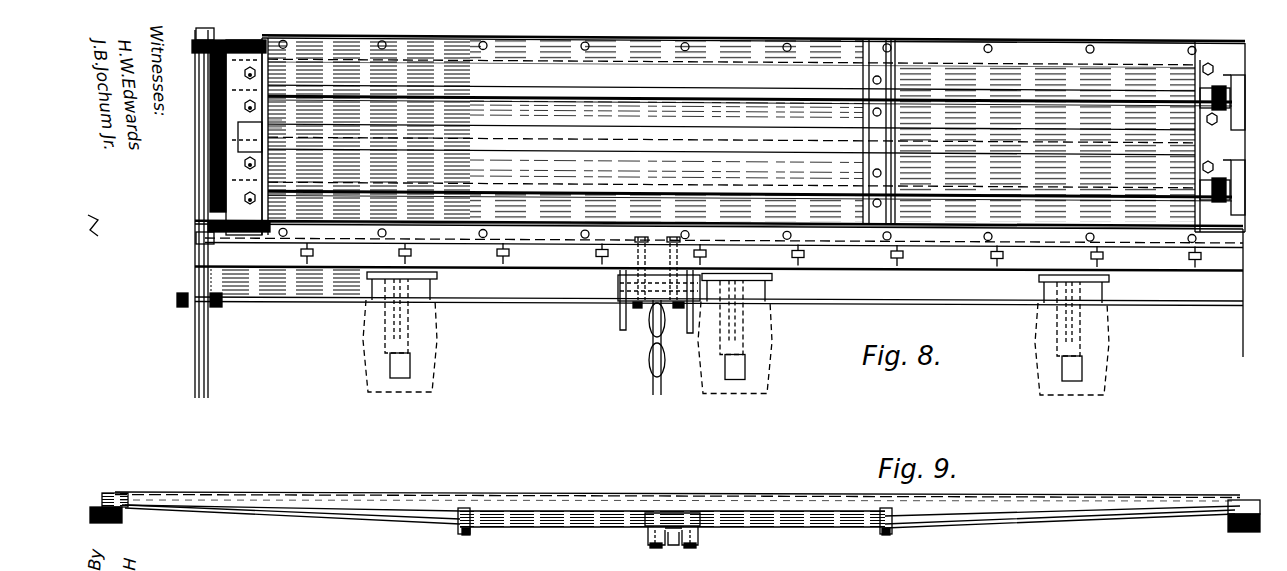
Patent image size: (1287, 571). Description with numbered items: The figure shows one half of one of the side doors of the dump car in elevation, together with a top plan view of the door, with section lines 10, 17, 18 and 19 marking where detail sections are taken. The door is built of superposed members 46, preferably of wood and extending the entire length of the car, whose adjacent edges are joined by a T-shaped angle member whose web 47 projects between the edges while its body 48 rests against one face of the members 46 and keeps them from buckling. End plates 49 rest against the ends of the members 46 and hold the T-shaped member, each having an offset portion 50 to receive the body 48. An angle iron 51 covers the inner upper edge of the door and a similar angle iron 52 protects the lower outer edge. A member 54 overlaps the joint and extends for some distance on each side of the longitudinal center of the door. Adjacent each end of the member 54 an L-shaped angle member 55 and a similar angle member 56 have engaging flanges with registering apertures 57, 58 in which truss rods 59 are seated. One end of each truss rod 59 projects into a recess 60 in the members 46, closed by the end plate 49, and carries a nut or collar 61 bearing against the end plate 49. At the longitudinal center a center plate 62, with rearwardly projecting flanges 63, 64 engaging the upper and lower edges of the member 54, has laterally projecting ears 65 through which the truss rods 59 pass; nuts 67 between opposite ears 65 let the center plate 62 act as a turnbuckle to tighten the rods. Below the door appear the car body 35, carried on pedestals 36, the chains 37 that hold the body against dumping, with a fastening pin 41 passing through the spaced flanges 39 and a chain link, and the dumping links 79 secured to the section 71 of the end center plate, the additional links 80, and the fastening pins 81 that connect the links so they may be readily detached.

In FIG. 8, the section line 10— 10 is at (295, 210).
In FIG. 9, the section line 17— 17 is at (686, 570).
In FIG. 9, the section line 18— 18 is at (456, 559).
In FIG. 8, the section line 19— 19 is at (1258, 130).
In FIG. 8, the car body 35 is at (349, 246).
In FIG. 8, the pedestals 36 is at (1102, 362).
In FIG. 8, the chains 37 is at (650, 368).
In FIG. 8, the flanges 39 is at (690, 333).
In FIG. 8, the fastening pin or bolt 41 is at (618, 284).
In FIG. 8, the members 46 is at (731, 72).
In FIG. 8, the web 47 is at (538, 138).
In FIG. 8, the body 48 is at (500, 130).
In FIG. 8, the end plates 49 is at (228, 155).
In FIG. 9, the end plates 49 is at (1240, 500).
In FIG. 8, the offset portion 50 is at (280, 120).
In FIG. 8, the angle iron 51 is at (530, 38).
In FIG. 9, the angle iron 51 is at (735, 506).
In FIG. 8, the angle iron 52 is at (570, 232).
In FIG. 8, the member 54 is at (1030, 78).
In FIG. 9, the member 54 is at (800, 516).
In FIG. 8, the angle bar or member 55 is at (864, 70).
In FIG. 9, the angle bar or member 55 is at (876, 508).
In FIG. 8, the angle bar or member 56 is at (895, 62).
In FIG. 9, the angle bar or member 56 is at (870, 532).
In FIG. 8, the aperture 57 is at (866, 80).
In FIG. 8, the aperture 58 is at (872, 112).
In FIG. 8, the truss rods or bars 59 is at (614, 184).
In FIG. 9, the truss rods or bars 59 is at (965, 530).
In FIG. 8, the recesses 60 is at (345, 100).
In FIG. 8, the nuts or collars 61 is at (200, 220).
In FIG. 9, the nuts or collars 61 is at (1244, 532).
In FIG. 8, the center plate 62 is at (1208, 126).
In FIG. 9, the center plate 62 is at (668, 528).
In FIG. 8, the rearwardly projecting flange 63 is at (1222, 62).
In FIG. 9, the rearwardly projecting flange 63 is at (688, 513).
In FIG. 8, the rearwardly projecting flange 64 is at (1212, 245).
In FIG. 8, the ears or lugs 65 is at (1212, 188).
In FIG. 9, the ears or lugs 65 is at (700, 545).
In FIG. 9, the nuts or collars 67 is at (668, 547).
In FIG. 8, the section of the center plate 71 is at (232, 148).
In FIG. 8, the dumping links 79 is at (198, 240).
In FIG. 8, the additional links 80 is at (195, 376).
In FIG. 8, the fastening pins or bolts 81 is at (177, 300).